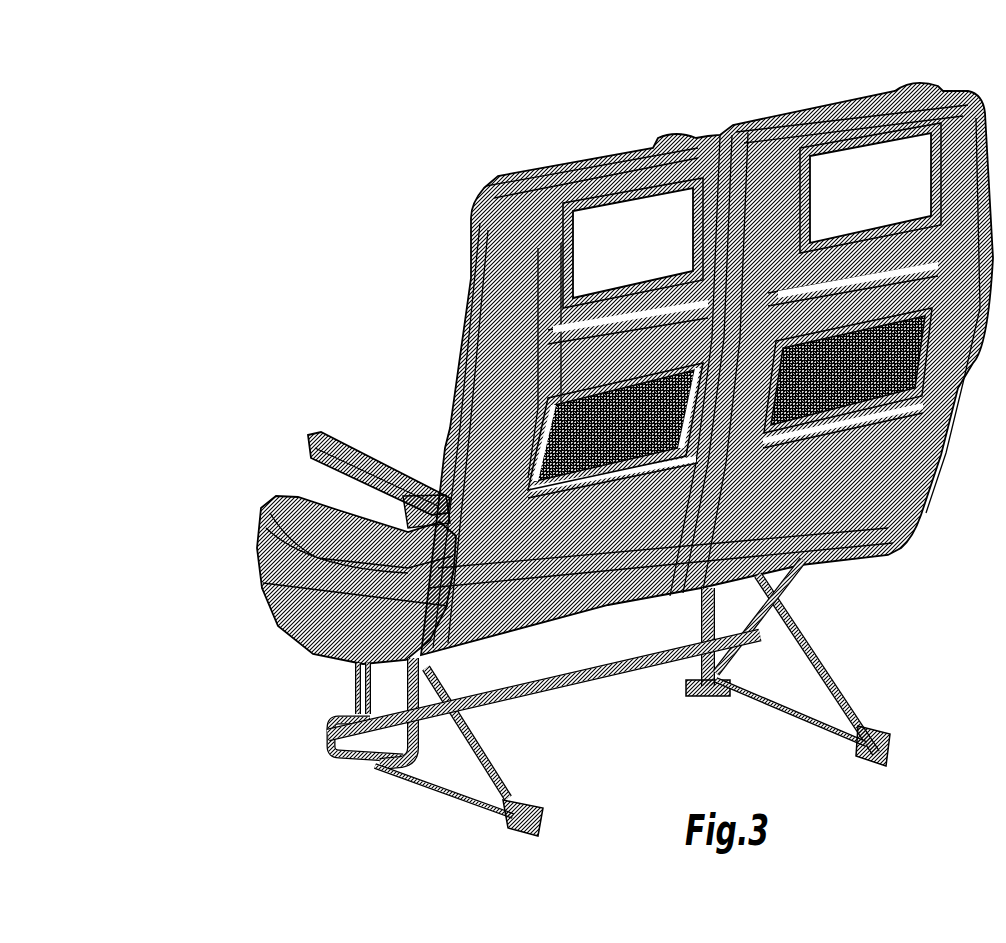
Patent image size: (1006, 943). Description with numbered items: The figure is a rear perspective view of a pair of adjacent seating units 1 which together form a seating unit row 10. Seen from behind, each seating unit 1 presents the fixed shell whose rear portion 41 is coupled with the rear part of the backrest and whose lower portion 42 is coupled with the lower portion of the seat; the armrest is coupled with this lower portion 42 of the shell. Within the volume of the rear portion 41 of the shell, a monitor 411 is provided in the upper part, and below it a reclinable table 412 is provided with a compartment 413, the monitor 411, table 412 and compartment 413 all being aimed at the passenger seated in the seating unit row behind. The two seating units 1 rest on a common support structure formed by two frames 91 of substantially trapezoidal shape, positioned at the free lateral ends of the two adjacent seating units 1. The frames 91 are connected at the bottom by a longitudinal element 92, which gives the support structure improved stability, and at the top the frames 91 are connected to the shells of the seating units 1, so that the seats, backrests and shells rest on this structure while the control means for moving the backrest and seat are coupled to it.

The seating unit row 10 is at (210, 157).
The seating unit 1 is at (421, 151).
The rear portion 41 is at (497, 309).
The monitor 411 is at (588, 198).
The reclinable table 412 is at (525, 395).
The compartment 413 is at (525, 443).
The lower portion 42 is at (293, 633).
The frame 91 is at (493, 763).
The longitudinal element 92 is at (610, 660).